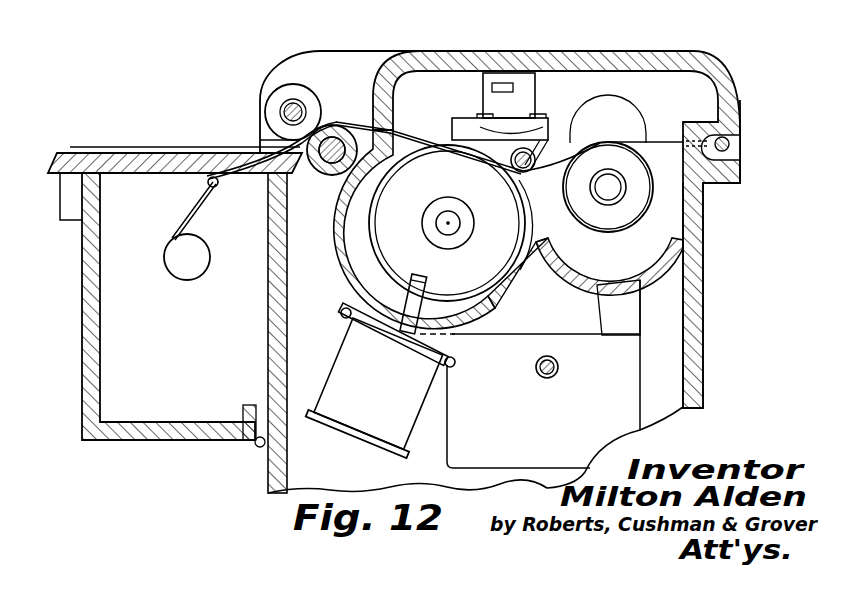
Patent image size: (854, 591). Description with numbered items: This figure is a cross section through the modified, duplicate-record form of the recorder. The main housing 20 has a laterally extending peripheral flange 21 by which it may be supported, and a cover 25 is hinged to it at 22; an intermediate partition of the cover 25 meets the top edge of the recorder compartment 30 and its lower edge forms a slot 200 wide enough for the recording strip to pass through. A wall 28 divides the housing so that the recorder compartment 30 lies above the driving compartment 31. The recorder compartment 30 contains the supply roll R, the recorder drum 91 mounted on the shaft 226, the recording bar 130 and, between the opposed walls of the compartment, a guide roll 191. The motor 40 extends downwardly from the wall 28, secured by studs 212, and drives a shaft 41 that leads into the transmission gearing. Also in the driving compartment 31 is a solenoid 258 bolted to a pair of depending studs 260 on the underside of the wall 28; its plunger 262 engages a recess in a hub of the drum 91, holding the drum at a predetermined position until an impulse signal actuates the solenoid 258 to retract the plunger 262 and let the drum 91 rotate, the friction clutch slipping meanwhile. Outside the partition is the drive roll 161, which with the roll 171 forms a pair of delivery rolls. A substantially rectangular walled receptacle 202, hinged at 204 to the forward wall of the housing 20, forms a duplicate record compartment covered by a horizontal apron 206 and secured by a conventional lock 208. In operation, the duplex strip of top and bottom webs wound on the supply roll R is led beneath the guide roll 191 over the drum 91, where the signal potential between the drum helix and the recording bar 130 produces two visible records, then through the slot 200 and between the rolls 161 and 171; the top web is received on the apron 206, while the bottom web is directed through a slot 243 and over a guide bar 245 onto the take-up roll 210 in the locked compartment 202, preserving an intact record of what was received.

The main housing 20 is at (705, 306).
The peripheral flange 21 is at (735, 184).
The hinge 22 is at (732, 144).
The cover 25 is at (519, 53).
The wall 28 is at (547, 264).
The recorder compartment 30 is at (660, 234).
The driving compartment 31 is at (690, 388).
The motor 40 is at (530, 374).
The shaft 41 is at (536, 372).
The recorder drum 91 is at (501, 214).
The recording bar 130 is at (458, 118).
The drive roll 161 is at (315, 176).
The delivery roll 171 is at (323, 78).
The guide roll 191 is at (531, 128).
The slot 200 is at (392, 129).
The walled receptacle 202 is at (83, 352).
The hinge 204 is at (258, 447).
The apron 206 is at (52, 153).
The lock 208 is at (62, 215).
The take-up roll 210 is at (185, 281).
The studs 212 is at (597, 316).
The shaft 226 is at (449, 221).
The slot 243 is at (218, 186).
The guide bar 245 is at (209, 185).
The solenoid 258 is at (368, 428).
The depending studs 260 is at (343, 296).
The solenoid plunger 262 is at (430, 285).
The supply roll R is at (602, 225).